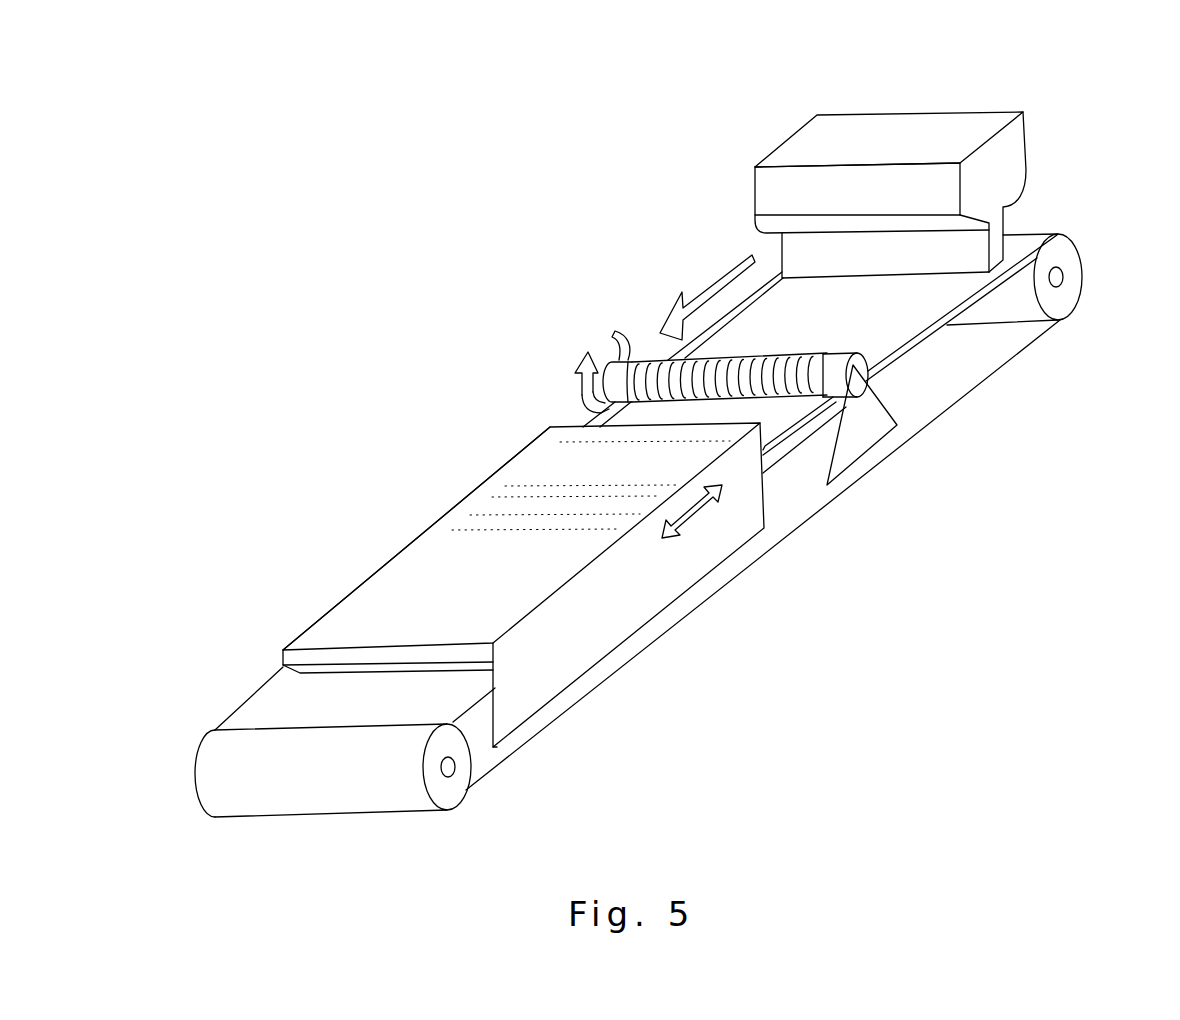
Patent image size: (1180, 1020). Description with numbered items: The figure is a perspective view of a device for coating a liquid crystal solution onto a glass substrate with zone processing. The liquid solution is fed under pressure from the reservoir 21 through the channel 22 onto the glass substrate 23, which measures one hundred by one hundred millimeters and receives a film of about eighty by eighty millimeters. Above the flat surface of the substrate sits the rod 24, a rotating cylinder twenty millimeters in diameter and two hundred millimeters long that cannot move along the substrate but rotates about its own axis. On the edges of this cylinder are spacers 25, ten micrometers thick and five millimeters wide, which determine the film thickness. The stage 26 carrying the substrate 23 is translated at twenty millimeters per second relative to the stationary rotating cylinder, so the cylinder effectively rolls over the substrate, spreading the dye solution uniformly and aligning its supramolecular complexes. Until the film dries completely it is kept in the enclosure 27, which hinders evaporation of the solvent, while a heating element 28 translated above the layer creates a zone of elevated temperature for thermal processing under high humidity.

The reservoir 21 is at (1008, 158).
The channel 22 is at (995, 238).
The glass substrate 23 is at (932, 318).
The rod 24 is at (808, 380).
The spacers 25 is at (615, 370).
The stage 26 is at (902, 350).
The enclosure 27 is at (533, 455).
The heating element 28 is at (463, 499).